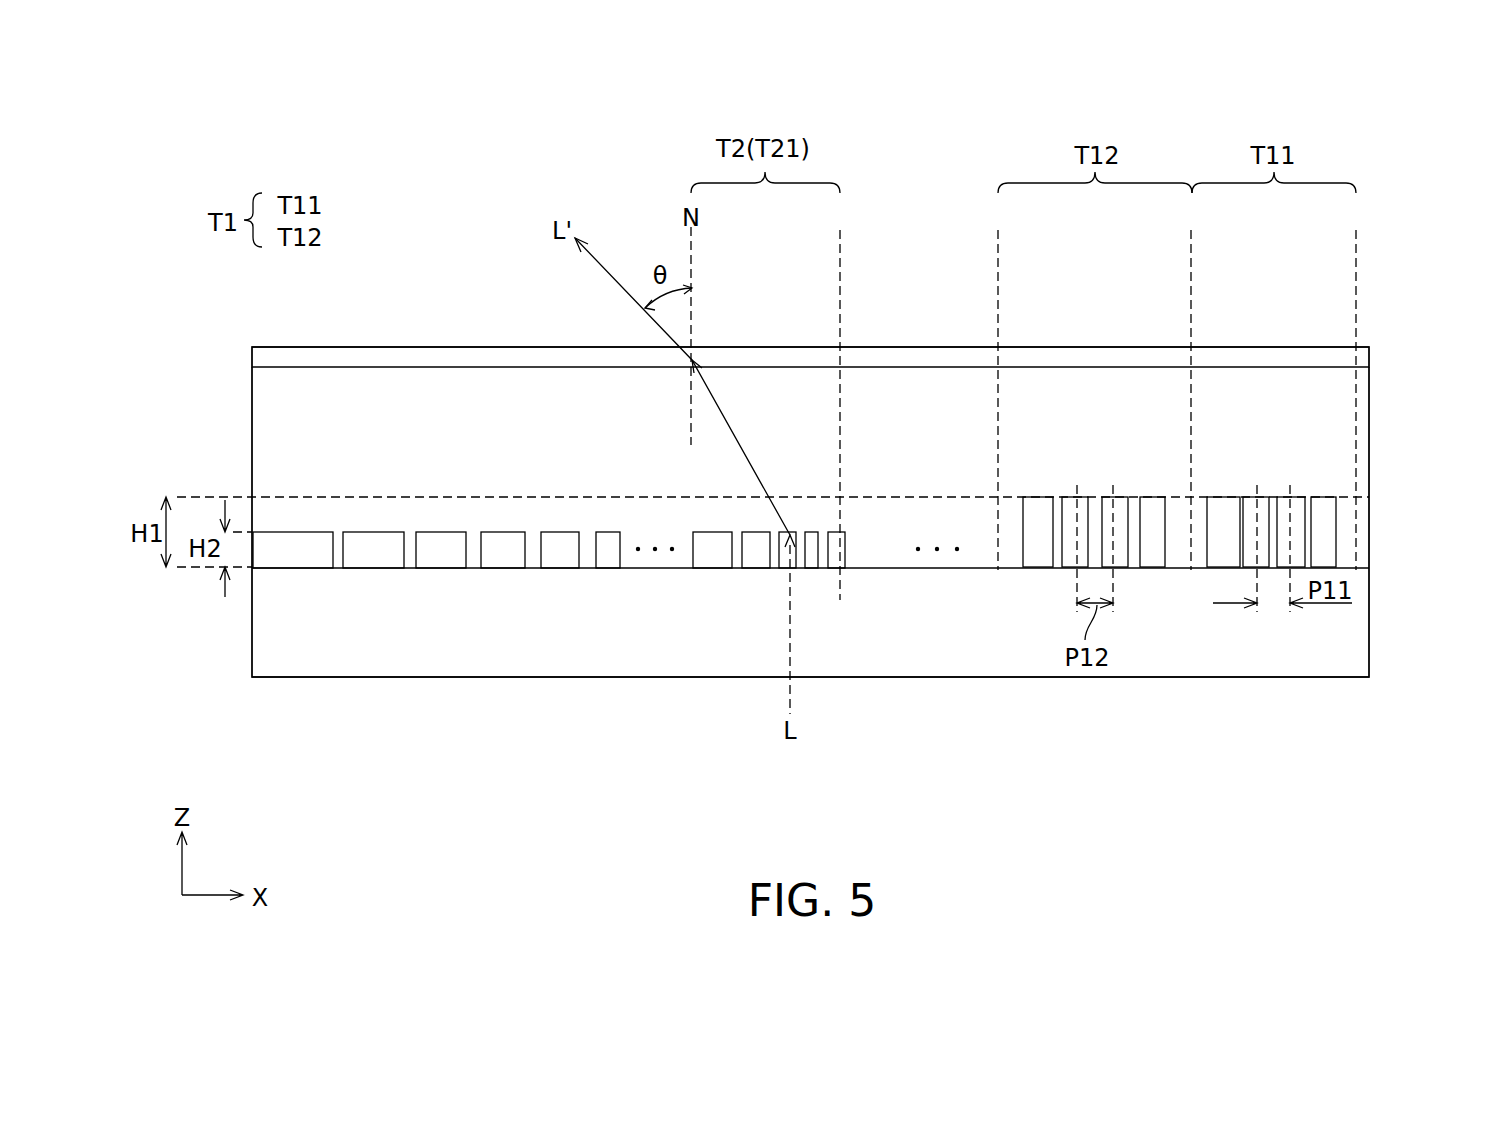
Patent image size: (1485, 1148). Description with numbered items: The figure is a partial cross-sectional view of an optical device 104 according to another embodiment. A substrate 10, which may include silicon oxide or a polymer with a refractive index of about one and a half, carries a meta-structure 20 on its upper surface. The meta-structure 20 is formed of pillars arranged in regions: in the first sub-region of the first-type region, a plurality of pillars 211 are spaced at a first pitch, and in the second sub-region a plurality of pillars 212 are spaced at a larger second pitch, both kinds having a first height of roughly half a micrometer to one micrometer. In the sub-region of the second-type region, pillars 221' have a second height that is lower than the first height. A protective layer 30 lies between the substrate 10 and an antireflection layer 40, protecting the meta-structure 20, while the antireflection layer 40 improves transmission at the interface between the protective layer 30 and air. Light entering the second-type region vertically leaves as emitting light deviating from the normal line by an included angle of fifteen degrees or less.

The optical device 104 is at (253, 107).
The antireflection layer 40 is at (272, 358).
The protective layer 30 is at (272, 426).
The substrate 10 is at (272, 624).
The meta-structure 20 is at (1372, 497).
The pillar 211 is at (1217, 555).
The pillar 212 is at (1071, 556).
The pillar 221' is at (722, 640).